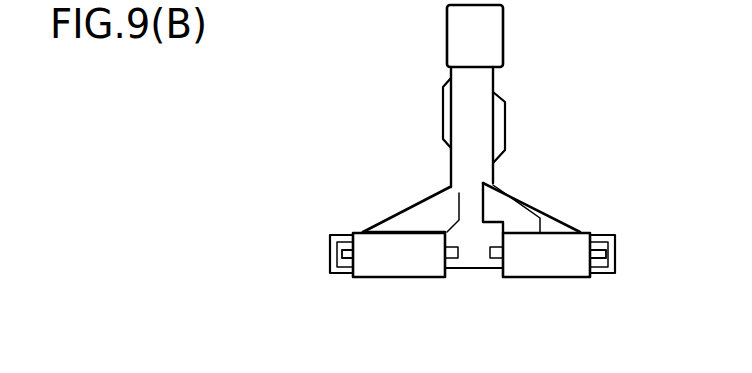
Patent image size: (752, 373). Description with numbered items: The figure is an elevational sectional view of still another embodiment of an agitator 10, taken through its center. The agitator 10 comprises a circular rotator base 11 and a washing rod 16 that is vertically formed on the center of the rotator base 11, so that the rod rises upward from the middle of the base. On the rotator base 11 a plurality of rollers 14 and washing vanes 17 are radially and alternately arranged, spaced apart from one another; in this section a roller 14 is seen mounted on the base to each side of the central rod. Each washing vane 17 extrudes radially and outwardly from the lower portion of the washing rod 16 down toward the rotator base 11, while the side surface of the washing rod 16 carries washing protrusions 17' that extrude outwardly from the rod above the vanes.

The agitator 10 is at (553, 208).
The rotator base 11 is at (337, 250).
The rollers 14 is at (393, 263).
The washing rod 16 is at (482, 80).
The washing vanes 17 is at (471, 191).
The washing protrusions 17' is at (506, 120).